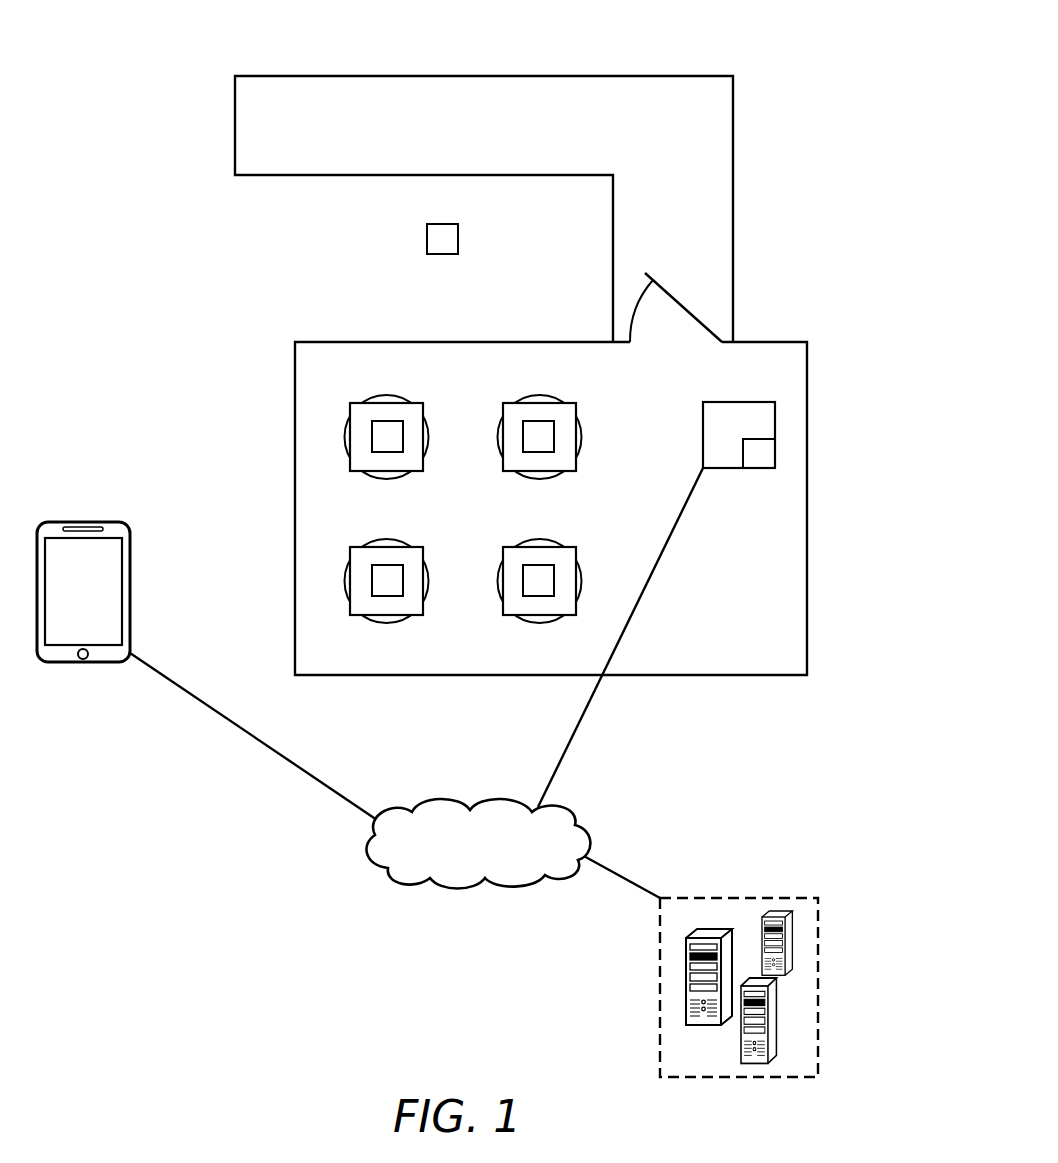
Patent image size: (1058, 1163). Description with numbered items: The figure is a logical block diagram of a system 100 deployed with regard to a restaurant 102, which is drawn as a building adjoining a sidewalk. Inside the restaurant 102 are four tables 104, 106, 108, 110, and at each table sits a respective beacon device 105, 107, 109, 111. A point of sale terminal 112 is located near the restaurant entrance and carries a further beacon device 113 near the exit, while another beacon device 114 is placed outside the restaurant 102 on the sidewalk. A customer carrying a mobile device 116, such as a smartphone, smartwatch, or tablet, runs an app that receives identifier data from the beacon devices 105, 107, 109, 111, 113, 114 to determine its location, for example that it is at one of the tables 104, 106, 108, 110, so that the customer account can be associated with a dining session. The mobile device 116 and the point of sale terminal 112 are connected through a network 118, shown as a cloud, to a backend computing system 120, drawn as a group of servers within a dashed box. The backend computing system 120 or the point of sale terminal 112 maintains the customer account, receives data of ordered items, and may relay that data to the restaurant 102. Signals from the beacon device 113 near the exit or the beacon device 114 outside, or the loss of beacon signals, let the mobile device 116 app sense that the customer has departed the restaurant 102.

The system 100 is at (733, 50).
The restaurant 102 is at (563, 340).
The table 104 is at (416, 403).
The beacon device 105 is at (403, 424).
The table 106 is at (566, 403).
The beacon device 107 is at (553, 424).
The table 108 is at (416, 547).
The beacon device 109 is at (403, 568).
The table 110 is at (566, 547).
The beacon device 111 is at (553, 568).
The point of sale terminal 112 is at (753, 402).
The beacon device 113 is at (768, 469).
The beacon device 114 is at (433, 222).
The mobile device 116 is at (95, 522).
The network 118 is at (573, 817).
The backend computing system 120 is at (742, 898).